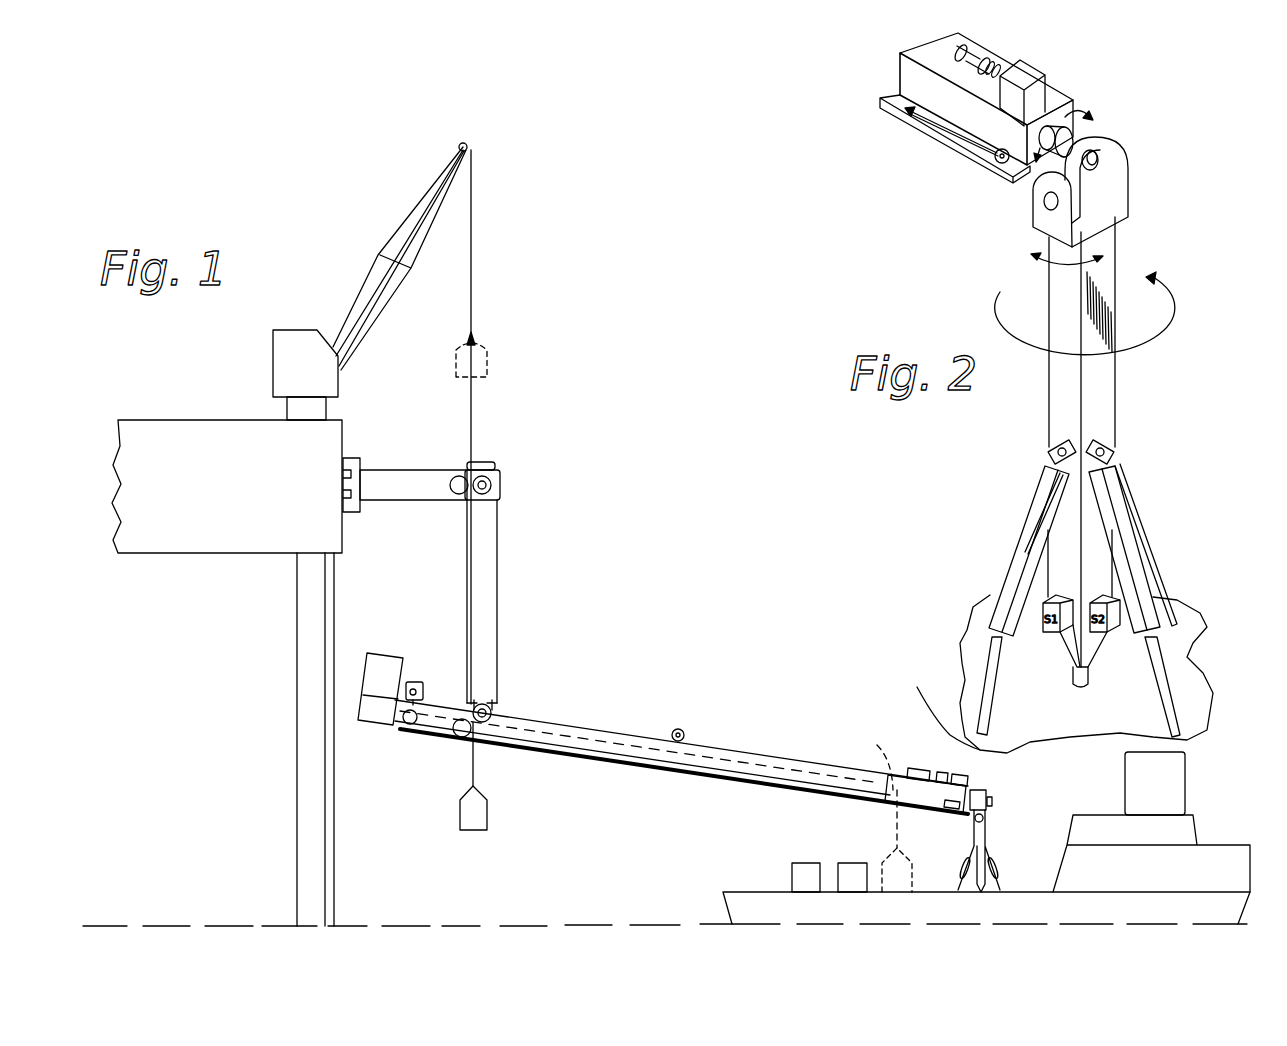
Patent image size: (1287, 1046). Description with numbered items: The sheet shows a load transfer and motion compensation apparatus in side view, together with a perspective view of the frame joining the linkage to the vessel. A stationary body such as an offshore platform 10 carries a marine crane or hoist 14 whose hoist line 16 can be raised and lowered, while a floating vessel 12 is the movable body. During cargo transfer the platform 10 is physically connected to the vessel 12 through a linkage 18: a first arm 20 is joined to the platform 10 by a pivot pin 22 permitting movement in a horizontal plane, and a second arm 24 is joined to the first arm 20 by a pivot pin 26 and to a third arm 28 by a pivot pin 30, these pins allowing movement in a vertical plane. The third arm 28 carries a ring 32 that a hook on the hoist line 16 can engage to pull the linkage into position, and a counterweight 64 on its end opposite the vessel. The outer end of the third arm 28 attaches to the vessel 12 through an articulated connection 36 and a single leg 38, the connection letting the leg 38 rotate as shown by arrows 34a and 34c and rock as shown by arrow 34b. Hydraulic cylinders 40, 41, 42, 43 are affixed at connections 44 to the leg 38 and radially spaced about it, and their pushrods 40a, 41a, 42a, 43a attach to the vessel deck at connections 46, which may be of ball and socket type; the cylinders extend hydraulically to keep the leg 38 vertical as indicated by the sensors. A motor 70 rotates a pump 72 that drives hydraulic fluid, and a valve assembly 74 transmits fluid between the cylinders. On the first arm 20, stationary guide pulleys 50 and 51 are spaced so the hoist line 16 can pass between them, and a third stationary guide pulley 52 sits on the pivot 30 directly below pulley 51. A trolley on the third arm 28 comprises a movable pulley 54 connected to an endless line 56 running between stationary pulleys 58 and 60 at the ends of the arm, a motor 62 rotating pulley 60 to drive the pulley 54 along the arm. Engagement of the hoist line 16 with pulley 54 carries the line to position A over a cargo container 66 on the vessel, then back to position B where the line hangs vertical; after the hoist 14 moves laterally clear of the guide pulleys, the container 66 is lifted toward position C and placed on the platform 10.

In FIG. 1, the stationary body 10 is at (152, 418).
In FIG. 1, the movable body 12 is at (716, 882).
In FIG. 2, the movable body 12 is at (1190, 626).
In FIG. 1, the marine crane or hoist 14 is at (298, 330).
In FIG. 1, the hoist line 16 is at (475, 266).
In FIG. 1, the linkage 18 is at (527, 621).
In FIG. 1, the first arm 20 is at (386, 469).
In FIG. 1, the pivot pin 22 is at (356, 457).
In FIG. 1, the second arm 24 is at (498, 556).
In FIG. 1, the pivot pin 26 is at (502, 482).
In FIG. 1, the third arm 28 is at (614, 718).
In FIG. 2, the third arm 28 is at (898, 66).
In FIG. 1, the pivot pin 30 is at (492, 708).
In FIG. 1, the ring 32 is at (681, 729).
In FIG. 2, the arrow 34a is at (1158, 338).
In FIG. 2, the arrow 34b is at (1088, 118).
In FIG. 2, the arrow 34c is at (1032, 258).
In FIG. 1, the articulated connection 36 is at (988, 792).
In FIG. 2, the articulated connection 36 is at (1098, 135).
In FIG. 1, the leg 38 is at (988, 836).
In FIG. 2, the leg 38 is at (1100, 384).
In FIG. 2, the hydraulic cylinder 40 is at (1020, 510).
In FIG. 2, the pushrod 40a is at (1040, 583).
In FIG. 2, the hydraulic cylinder 41 is at (1028, 548).
In FIG. 2, the pushrod 41a is at (1000, 668).
In FIG. 2, the hydraulic cylinder 42 is at (1128, 548).
In FIG. 2, the pushrod 42a is at (1152, 668).
In FIG. 2, the hydraulic cylinder 43 is at (1140, 512).
In FIG. 2, the pushrod 43a is at (1150, 583).
In FIG. 2, the connections 44 is at (1095, 425).
In FIG. 2, the connection 46 is at (963, 660).
In FIG. 1, the stationary guide pulley 50 is at (452, 480).
In FIG. 1, the stationary guide pulley 51 is at (483, 477).
In FIG. 1, the third stationary guide pulley 52 is at (492, 700).
In FIG. 1, the movable pulley 54 is at (458, 738).
In FIG. 1, the endless line 56 is at (737, 775).
In FIG. 2, the endless line 56 is at (947, 130).
In FIG. 1, the stationary pulley 58 is at (950, 812).
In FIG. 2, the stationary pulley 58 is at (995, 165).
In FIG. 1, the stationary pulley 60 is at (416, 712).
In FIG. 1, the motor 62 is at (413, 681).
In FIG. 1, the counterweight 64 is at (382, 652).
In FIG. 1, the cargo container 66 is at (490, 372).
In FIG. 2, the motor 70 is at (975, 50).
In FIG. 2, the pump 72 is at (1000, 67).
In FIG. 2, the valve assembly 74 is at (1040, 80).
In FIG. 1, the position A is at (900, 879).
In FIG. 1, the position B is at (490, 795).
In FIG. 1, the position C is at (490, 350).